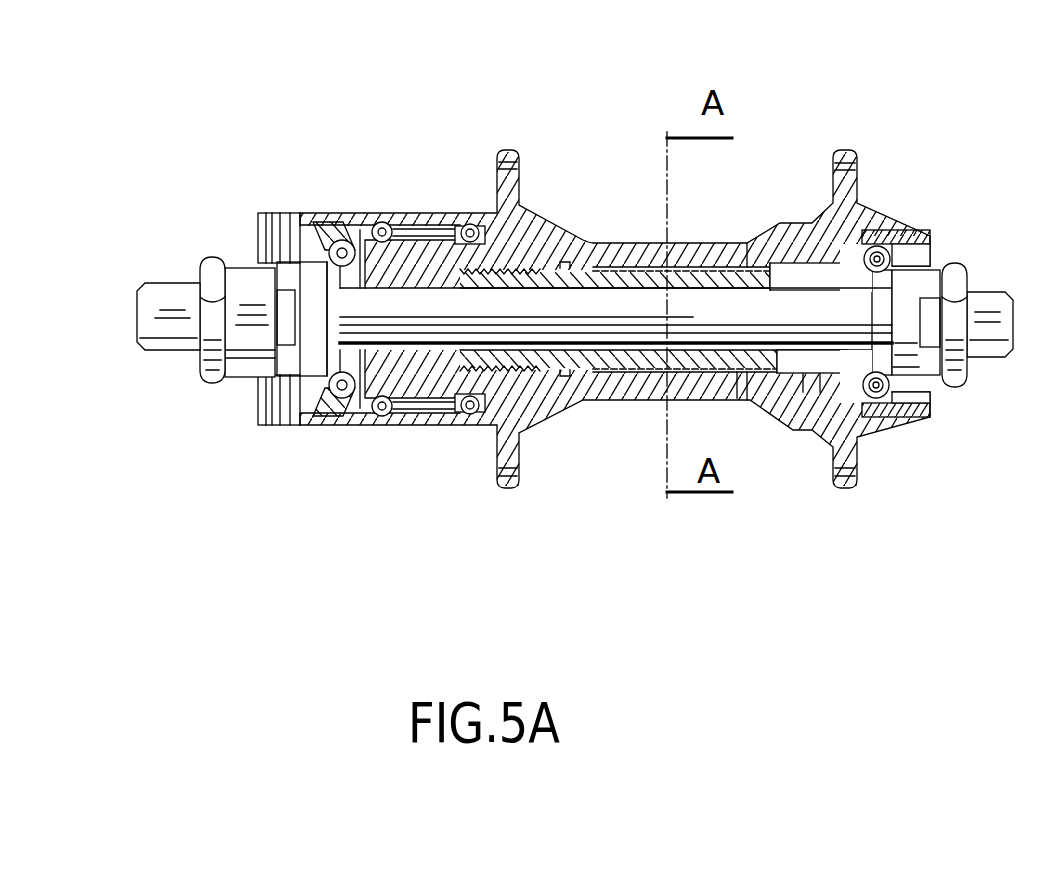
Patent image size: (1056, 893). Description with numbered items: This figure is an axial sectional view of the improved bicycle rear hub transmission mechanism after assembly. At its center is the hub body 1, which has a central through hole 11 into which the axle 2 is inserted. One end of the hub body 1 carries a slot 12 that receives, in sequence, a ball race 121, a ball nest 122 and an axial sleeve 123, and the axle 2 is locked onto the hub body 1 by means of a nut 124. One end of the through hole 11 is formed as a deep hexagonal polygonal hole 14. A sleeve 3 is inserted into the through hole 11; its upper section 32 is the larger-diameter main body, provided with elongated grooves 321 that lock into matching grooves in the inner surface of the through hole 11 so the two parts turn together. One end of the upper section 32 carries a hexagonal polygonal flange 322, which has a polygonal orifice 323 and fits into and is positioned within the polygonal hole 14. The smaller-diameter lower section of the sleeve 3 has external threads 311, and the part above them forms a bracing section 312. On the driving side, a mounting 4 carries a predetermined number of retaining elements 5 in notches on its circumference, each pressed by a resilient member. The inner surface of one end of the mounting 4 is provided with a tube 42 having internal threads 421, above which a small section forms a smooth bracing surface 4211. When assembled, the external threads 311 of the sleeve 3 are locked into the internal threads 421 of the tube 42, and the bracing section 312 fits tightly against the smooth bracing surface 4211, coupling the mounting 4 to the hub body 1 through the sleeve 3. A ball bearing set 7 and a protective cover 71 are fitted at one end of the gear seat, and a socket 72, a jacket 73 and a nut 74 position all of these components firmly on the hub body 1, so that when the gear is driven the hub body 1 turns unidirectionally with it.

The hub body 1 is at (569, 395).
The central through hole 11 is at (745, 265).
The slot 12 is at (873, 230).
The ball race 121 is at (913, 230).
The ball nest 122 is at (880, 430).
The axial sleeve 123 is at (933, 373).
The nut 124 is at (963, 385).
The polygonal hole 14 is at (797, 263).
The axle 2 is at (712, 300).
The sleeve 3 is at (760, 398).
The upper section 32 is at (627, 357).
The external threads 311 is at (450, 393).
The bracing section 312 is at (533, 425).
The elongated grooves 321 is at (737, 398).
The polygonal flange 322 is at (803, 392).
The polygonal orifice 323 is at (820, 392).
The mounting 4 is at (432, 260).
The tube 42 is at (518, 271).
The internal threads 421 is at (505, 270).
The smooth bracing surface 4211 is at (583, 235).
The retaining elements 5 is at (503, 442).
The ball bearing set 7 is at (350, 230).
The protective cover 71 is at (304, 245).
The socket 72 is at (287, 427).
The jacket 73 is at (250, 335).
The nut 74 is at (212, 380).